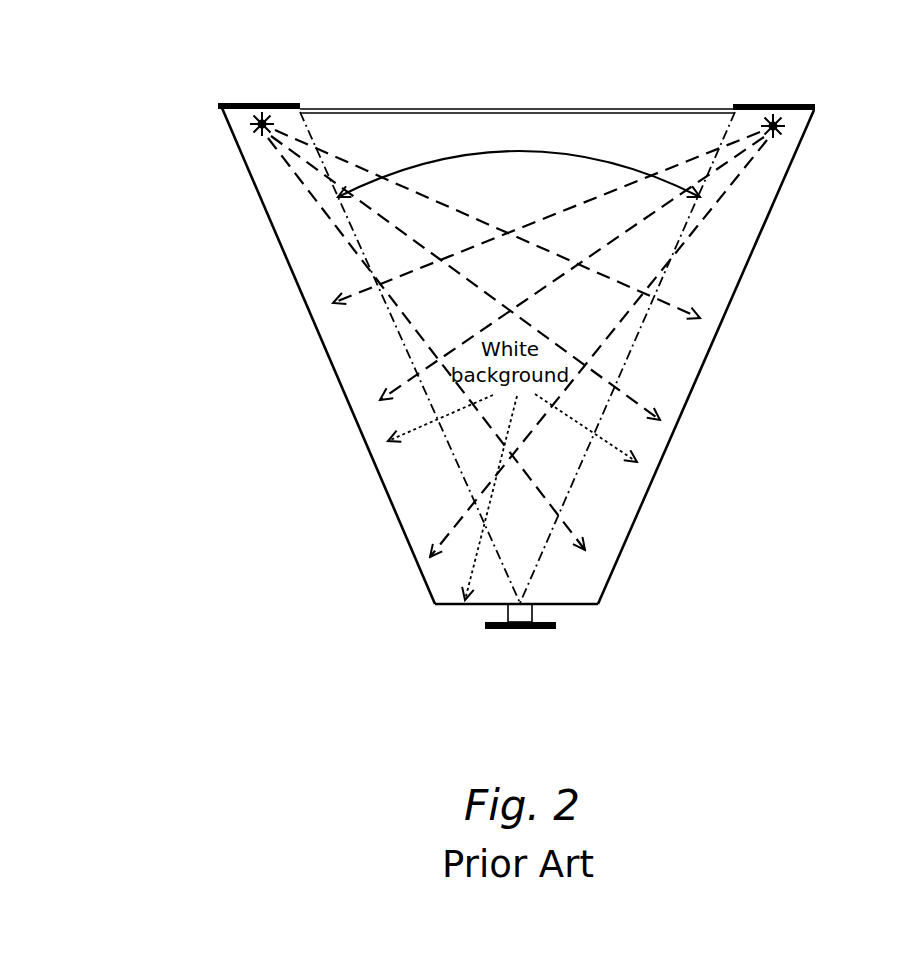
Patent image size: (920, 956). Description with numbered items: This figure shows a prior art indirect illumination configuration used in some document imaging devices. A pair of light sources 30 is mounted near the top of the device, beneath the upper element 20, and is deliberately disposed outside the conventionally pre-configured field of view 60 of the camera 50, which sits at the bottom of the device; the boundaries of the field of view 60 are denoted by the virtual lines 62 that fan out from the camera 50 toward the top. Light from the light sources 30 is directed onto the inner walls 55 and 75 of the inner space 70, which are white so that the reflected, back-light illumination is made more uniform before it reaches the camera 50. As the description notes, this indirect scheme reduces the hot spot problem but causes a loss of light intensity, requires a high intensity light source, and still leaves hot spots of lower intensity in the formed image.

The enclosure top / window 20 is at (620, 110).
The light sources 30 is at (252, 124).
The camera 50 is at (522, 628).
The inner wall 55 is at (450, 607).
The field of view 60 is at (453, 155).
The virtual lines 62 is at (402, 334).
The inner space 70 is at (705, 288).
The inner wall 75 is at (350, 405).